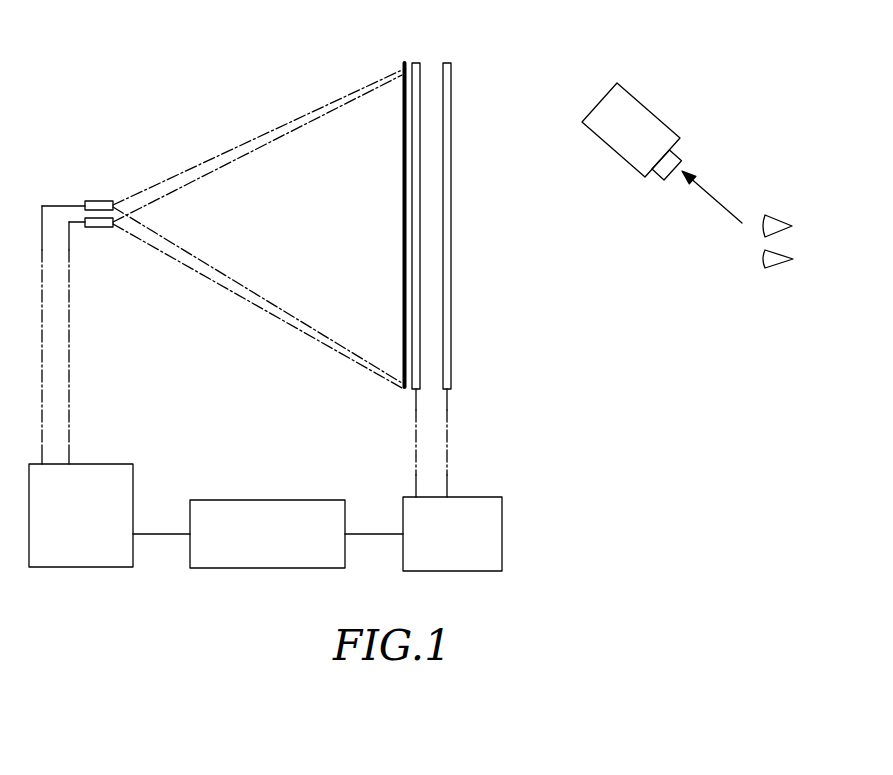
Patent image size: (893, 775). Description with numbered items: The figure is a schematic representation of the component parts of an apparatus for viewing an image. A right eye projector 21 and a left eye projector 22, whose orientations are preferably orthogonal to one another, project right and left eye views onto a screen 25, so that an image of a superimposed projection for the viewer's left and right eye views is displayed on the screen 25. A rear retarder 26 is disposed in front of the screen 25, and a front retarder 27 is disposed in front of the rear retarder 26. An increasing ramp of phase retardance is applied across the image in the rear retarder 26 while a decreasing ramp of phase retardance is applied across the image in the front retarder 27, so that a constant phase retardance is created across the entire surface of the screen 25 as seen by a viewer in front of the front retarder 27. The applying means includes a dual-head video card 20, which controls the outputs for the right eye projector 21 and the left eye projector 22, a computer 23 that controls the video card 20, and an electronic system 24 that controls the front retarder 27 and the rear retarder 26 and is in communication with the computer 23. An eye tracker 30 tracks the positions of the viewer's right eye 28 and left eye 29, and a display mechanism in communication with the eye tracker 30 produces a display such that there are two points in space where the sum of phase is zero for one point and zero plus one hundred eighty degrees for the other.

The dual-head video card 20 is at (104, 464).
The right eye projector 21 is at (93, 201).
The left eye projector 22 is at (97, 227).
The computer 23 is at (245, 500).
The electronic system 24 is at (477, 497).
The screen 25 is at (403, 66).
The rear retarder 26 is at (425, 63).
The front retarder 27 is at (451, 63).
The viewer's right eye 28 is at (776, 216).
The viewer's left eye 29 is at (775, 270).
The eye tracker 30 is at (640, 100).